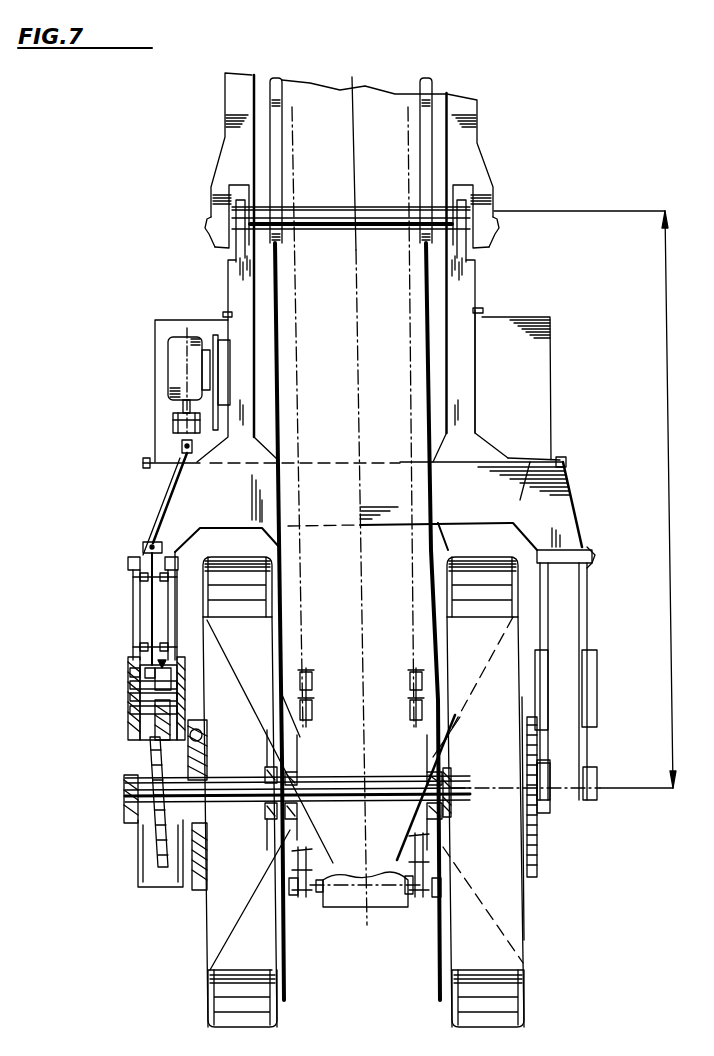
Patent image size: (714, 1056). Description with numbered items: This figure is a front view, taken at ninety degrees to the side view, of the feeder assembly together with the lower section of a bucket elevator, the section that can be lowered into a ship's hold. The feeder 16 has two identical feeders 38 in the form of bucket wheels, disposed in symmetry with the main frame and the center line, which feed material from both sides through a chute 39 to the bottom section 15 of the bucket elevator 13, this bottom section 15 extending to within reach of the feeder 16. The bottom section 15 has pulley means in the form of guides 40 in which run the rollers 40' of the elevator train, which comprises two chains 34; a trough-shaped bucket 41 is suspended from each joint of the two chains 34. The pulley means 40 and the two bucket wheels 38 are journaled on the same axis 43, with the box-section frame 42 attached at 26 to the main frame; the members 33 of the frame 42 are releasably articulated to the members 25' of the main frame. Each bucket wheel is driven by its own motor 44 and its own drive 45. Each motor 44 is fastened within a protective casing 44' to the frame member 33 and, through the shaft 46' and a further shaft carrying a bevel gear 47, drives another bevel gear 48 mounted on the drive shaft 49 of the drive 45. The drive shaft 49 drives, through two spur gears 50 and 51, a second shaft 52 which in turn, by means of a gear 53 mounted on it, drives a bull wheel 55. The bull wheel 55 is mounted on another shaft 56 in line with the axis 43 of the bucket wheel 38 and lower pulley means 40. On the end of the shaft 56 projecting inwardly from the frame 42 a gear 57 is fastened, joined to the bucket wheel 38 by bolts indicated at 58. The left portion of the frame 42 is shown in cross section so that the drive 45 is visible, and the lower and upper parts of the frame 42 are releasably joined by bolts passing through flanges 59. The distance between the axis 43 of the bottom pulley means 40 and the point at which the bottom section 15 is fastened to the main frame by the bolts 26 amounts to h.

The members of the main frame 25' is at (334, 530).
The bucket elevator 13 is at (406, 198).
The attachment point (bolts) 26 is at (207, 213).
The members of the frame 33 is at (237, 282).
The motor 44 is at (180, 433).
The protective casing 44' is at (533, 387).
The shaft 46' is at (154, 477).
The frame 42 is at (577, 473).
The flanges 59 is at (135, 556).
The bottom section of the bucket elevator 15 is at (396, 617).
The bevel gear 47 is at (150, 662).
The bevel gear 48 is at (165, 665).
The drive shaft 49 is at (130, 673).
The spur gear 50 is at (130, 687).
The spur gear 51 is at (130, 700).
The second shaft 52 is at (130, 713).
The drive 45 is at (112, 721).
The gear 53 is at (183, 683).
The bolts 58 is at (205, 698).
The gear 57 is at (200, 727).
The bull wheel 55 is at (150, 763).
The shaft 56 is at (127, 806).
The chute 39 is at (297, 775).
The axis 43 is at (378, 780).
The pulley means (guides) 40 is at (315, 795).
The rollers 40' is at (460, 790).
The trough-shaped bucket 41 is at (348, 888).
The chains 34 is at (310, 893).
The feeders (bucket wheels) 38 is at (270, 990).
The feeder 16 is at (200, 1017).
The distance h is at (587, 499).